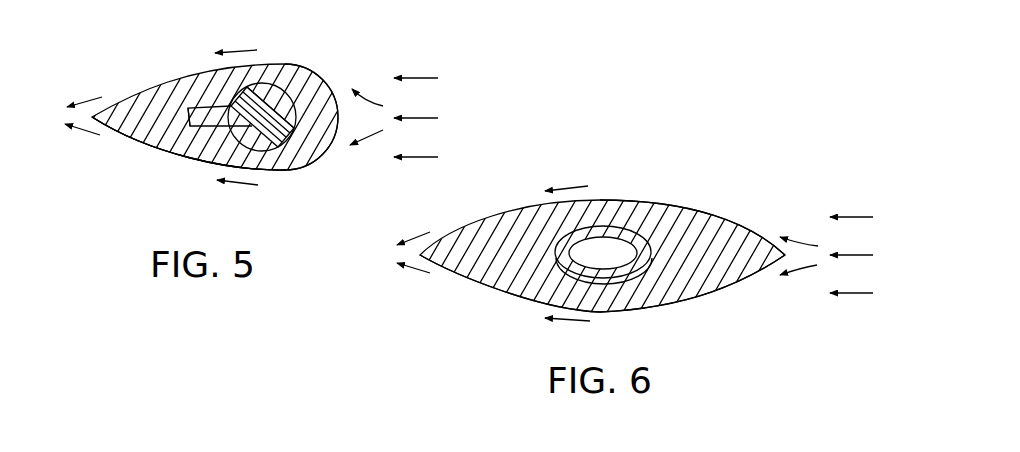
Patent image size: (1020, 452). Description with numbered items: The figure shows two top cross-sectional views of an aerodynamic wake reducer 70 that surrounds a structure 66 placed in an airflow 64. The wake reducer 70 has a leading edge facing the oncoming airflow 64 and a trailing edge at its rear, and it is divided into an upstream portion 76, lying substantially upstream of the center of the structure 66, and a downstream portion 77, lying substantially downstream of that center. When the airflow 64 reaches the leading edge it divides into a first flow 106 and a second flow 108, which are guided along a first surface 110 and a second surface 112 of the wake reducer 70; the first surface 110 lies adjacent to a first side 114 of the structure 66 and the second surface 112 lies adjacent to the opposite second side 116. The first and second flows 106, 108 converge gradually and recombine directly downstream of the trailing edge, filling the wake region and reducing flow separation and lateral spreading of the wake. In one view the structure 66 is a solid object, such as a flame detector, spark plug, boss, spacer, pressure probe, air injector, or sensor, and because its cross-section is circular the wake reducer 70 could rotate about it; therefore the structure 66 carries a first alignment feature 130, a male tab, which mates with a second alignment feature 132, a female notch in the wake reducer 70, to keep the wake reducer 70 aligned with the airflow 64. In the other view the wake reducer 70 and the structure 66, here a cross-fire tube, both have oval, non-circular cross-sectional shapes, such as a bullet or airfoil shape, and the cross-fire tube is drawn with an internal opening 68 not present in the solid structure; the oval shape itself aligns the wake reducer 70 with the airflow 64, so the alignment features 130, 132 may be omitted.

In FIG. 5, the airflow 64 is at (425, 77).
In FIG. 6, the airflow 64 is at (858, 216).
In FIG. 5, the cross-fire tube 66 is at (283, 68).
In FIG. 6, the cross-fire tube 66 is at (608, 228).
In FIG. 6, the aperture 68 is at (616, 252).
In FIG. 5, the aerodynamic wake reducer 70 is at (364, 67).
In FIG. 6, the aerodynamic wake reducer 70 is at (765, 182).
In FIG. 5, the upstream portion 76 is at (299, 152).
In FIG. 6, the upstream portion 76 is at (690, 287).
In FIG. 5, the downstream portion 77 is at (162, 150).
In FIG. 6, the downstream portion 77 is at (522, 298).
In FIG. 5, the first flow 106 is at (243, 50).
In FIG. 6, the first flow 106 is at (573, 186).
In FIG. 5, the second flow 108 is at (83, 134).
In FIG. 6, the second flow 108 is at (417, 275).
In FIG. 5, the first surface 110 is at (320, 70).
In FIG. 6, the first surface 110 is at (707, 213).
In FIG. 5, the second surface 112 is at (292, 171).
In FIG. 6, the second surface 112 is at (633, 310).
In FIG. 5, the first side 114 is at (262, 96).
In FIG. 5, the second side 116 is at (280, 171).
In FIG. 5, the first alignment feature 130 is at (198, 128).
In FIG. 5, the second alignment feature 132 is at (199, 106).